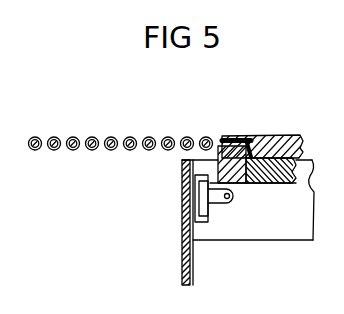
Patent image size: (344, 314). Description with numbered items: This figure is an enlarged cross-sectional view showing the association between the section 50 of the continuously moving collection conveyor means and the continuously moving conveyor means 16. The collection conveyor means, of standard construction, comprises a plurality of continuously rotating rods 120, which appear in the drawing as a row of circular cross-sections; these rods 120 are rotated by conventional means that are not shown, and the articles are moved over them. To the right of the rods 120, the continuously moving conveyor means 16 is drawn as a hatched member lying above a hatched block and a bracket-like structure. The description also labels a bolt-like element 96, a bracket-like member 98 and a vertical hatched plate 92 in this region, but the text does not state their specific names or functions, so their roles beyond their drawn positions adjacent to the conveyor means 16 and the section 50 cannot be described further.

The continuously rotating rods 120 is at (111, 150).
The section of the continuously moving collection conveyor means 50 is at (133, 123).
The continuously moving conveyor means 16 is at (277, 136).
The bolt 96 is at (236, 184).
The bracket 98 is at (313, 191).
The plate 92 is at (192, 272).